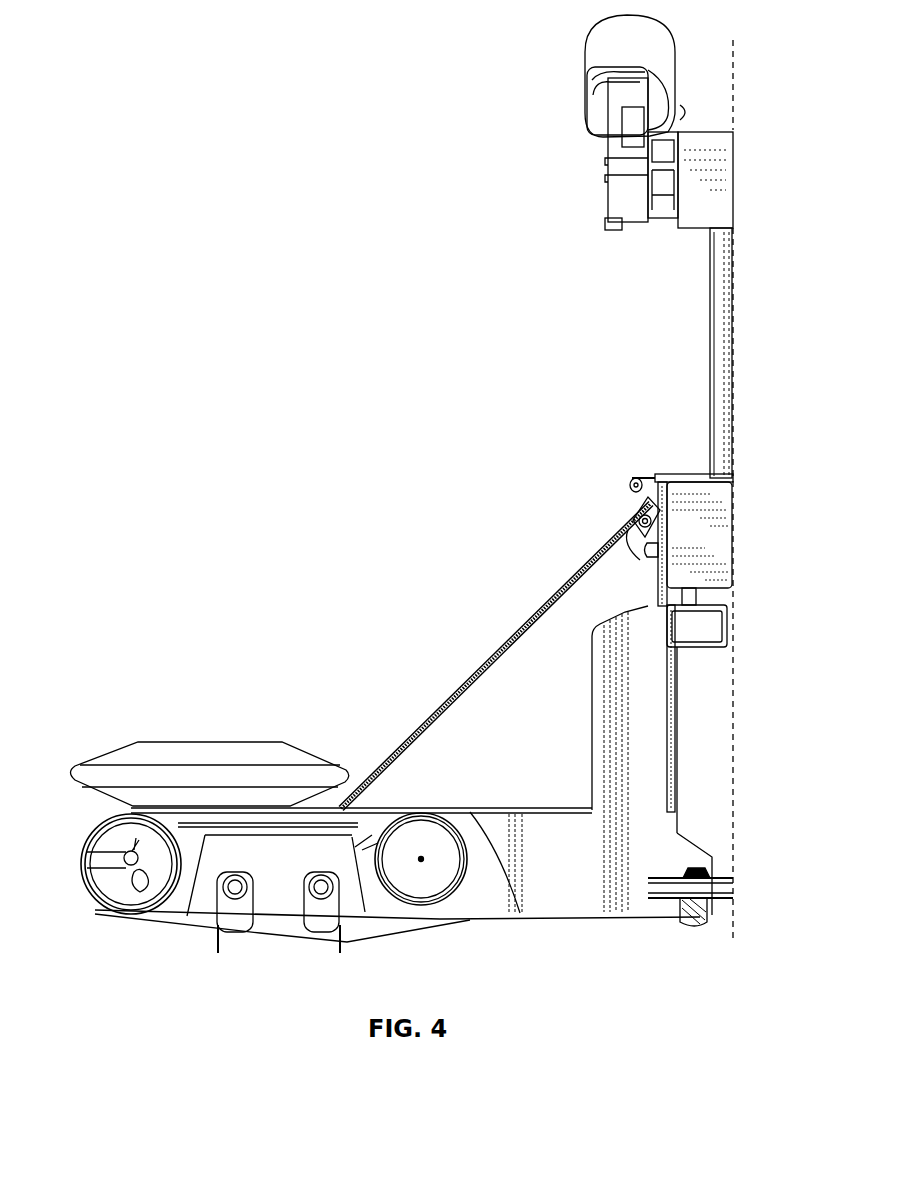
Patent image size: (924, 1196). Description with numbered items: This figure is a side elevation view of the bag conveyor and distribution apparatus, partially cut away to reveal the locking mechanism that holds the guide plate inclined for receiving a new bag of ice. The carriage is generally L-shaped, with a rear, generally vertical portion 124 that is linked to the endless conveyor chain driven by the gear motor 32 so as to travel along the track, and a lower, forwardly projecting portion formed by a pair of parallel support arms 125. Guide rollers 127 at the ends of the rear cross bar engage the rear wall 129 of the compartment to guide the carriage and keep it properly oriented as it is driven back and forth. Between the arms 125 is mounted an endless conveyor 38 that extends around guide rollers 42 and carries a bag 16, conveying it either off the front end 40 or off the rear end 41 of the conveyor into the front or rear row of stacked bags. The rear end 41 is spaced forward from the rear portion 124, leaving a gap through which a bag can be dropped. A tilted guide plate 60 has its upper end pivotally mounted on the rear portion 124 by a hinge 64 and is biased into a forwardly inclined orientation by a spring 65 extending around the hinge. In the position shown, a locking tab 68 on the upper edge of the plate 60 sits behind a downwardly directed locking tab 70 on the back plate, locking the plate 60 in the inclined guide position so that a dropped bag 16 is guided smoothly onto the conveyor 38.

The bag 16 is at (201, 748).
The gear motor 32 is at (598, 56).
The endless conveyor 38 is at (373, 812).
The front end of conveyor 40 is at (90, 819).
The rear end of conveyor 41 is at (464, 808).
The guide roller 42 is at (84, 862).
The guide plate 60 is at (507, 637).
The hinge 64 is at (633, 518).
The spring 65 is at (651, 566).
The locking tab 68 is at (656, 482).
The locking tab 70 is at (630, 483).
The rear vertical portion 124 is at (630, 762).
The support arms 125 is at (528, 853).
The guide roller 127 is at (672, 902).
The rear wall 129 is at (740, 722).